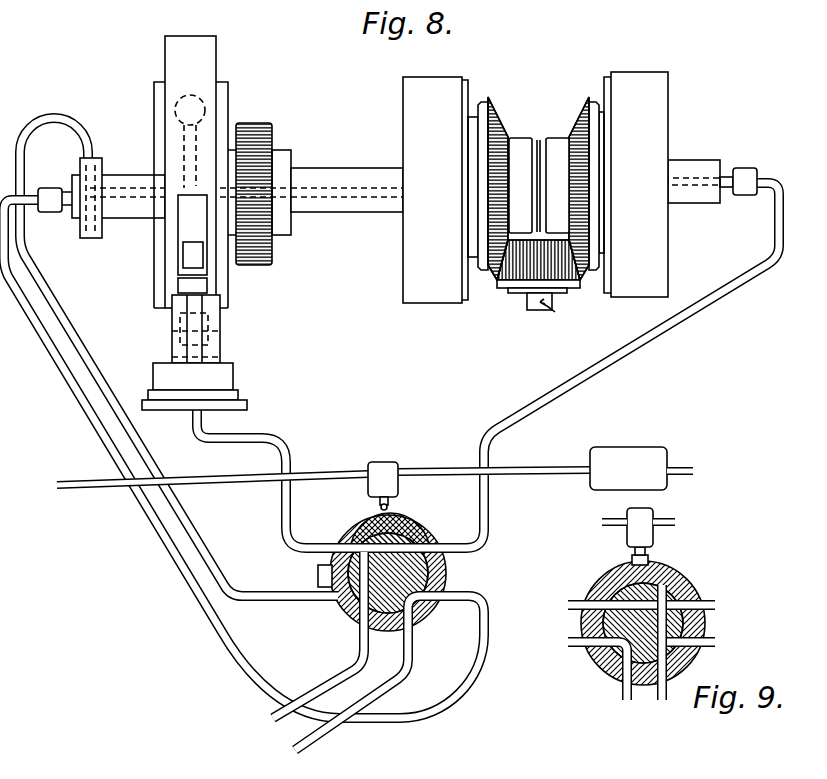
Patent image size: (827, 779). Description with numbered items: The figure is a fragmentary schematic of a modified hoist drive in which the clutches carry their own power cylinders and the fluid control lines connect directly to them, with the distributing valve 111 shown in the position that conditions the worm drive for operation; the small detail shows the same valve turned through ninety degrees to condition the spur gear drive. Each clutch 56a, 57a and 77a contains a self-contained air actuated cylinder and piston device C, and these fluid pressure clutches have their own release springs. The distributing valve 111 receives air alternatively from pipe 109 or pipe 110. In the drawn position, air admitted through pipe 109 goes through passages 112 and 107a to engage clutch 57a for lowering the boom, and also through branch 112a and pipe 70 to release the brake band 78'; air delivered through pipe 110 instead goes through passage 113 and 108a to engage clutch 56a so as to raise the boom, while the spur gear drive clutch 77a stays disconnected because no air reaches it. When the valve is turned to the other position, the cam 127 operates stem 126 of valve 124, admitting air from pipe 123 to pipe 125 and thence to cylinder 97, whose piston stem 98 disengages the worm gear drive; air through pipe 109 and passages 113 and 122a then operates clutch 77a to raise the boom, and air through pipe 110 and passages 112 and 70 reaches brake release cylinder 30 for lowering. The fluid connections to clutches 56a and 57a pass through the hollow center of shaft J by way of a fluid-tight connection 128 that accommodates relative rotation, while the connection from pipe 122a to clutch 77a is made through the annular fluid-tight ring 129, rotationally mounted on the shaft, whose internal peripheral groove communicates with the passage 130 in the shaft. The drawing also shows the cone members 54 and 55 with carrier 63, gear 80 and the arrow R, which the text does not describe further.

In FIG. 8, the brake release cylinder 30 is at (222, 379).
In FIG. 8, the cone friction member 54 is at (490, 103).
In FIG. 8, the cone friction member 55 is at (584, 100).
In FIG. 8, the clutch 56a is at (458, 68).
In FIG. 8, the clutch 57a is at (668, 66).
In FIG. 8, the roller carrier 63 is at (572, 283).
In FIG. 8, the pipe 70 is at (279, 449).
In FIG. 9, the pipe 70 is at (568, 604).
In FIG. 8, the spur gear drive clutch 77a is at (165, 104).
In FIG. 8, the brake band 78' is at (208, 167).
In FIG. 8, the gear 80 is at (249, 125).
In FIG. 8, the cylinder 97 is at (630, 443).
In FIG. 8, the piston stem 98 is at (685, 472).
In FIG. 8, the passage 107a is at (684, 174).
In FIG. 9, the passage 107a is at (710, 601).
In FIG. 8, the passage 108a is at (60, 378).
In FIG. 9, the passage 108a is at (714, 641).
In FIG. 8, the pipe 109 is at (268, 719).
In FIG. 9, the pipe 109 is at (626, 702).
In FIG. 8, the pipe 110 is at (294, 751).
In FIG. 9, the pipe 110 is at (662, 702).
In FIG. 8, the distributing valve 111 is at (450, 578).
In FIG. 9, the distributing valve 111 is at (643, 623).
In FIG. 8, the passage 112 is at (420, 545).
In FIG. 9, the passage 112 is at (614, 578).
In FIG. 8, the branch 112a is at (358, 541).
In FIG. 8, the passage 113 is at (420, 612).
In FIG. 9, the passage 113 is at (612, 666).
In FIG. 8, the passage 122a is at (70, 322).
In FIG. 9, the passage 122a is at (568, 644).
In FIG. 8, the pipe 123 is at (215, 482).
In FIG. 9, the pipe 123 is at (610, 526).
In FIG. 8, the valve 124 is at (395, 456).
In FIG. 9, the valve 124 is at (642, 511).
In FIG. 8, the pipe 125 is at (528, 472).
In FIG. 9, the pipe 125 is at (666, 521).
In FIG. 8, the stem 126 is at (390, 505).
In FIG. 9, the stem 126 is at (648, 551).
In FIG. 8, the cam 127 is at (318, 578).
In FIG. 9, the cam 127 is at (650, 559).
In FIG. 8, the fluid-tight connection 128 is at (48, 188).
In FIG. 8, the annular fluid-tight ring 129 is at (92, 232).
In FIG. 8, the passage 130 is at (137, 181).
In FIG. 8, the air actuated cylinder and piston device C is at (180, 95).
In FIG. 8, the shaft J is at (352, 168).
In FIG. 8, the direction of rotation R is at (554, 311).